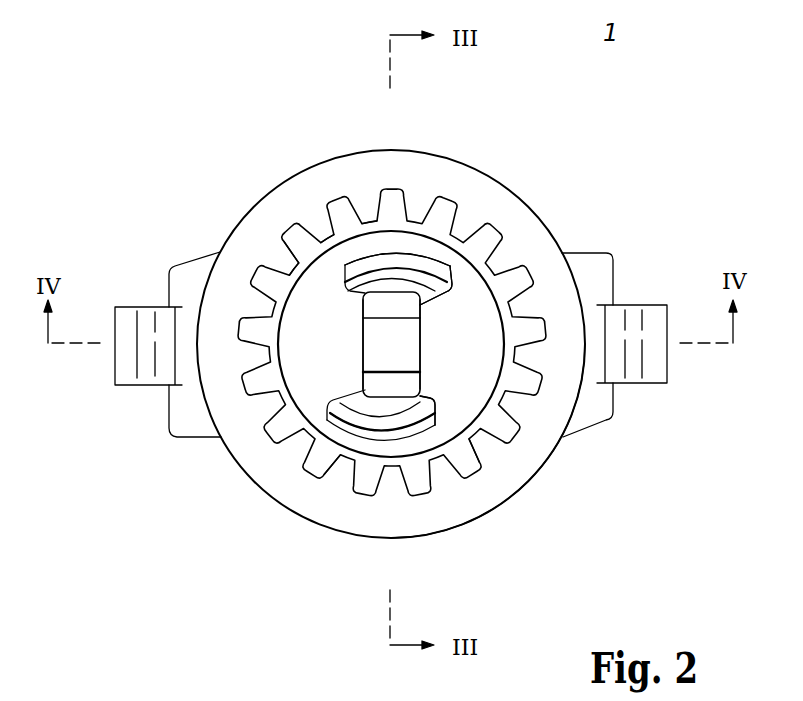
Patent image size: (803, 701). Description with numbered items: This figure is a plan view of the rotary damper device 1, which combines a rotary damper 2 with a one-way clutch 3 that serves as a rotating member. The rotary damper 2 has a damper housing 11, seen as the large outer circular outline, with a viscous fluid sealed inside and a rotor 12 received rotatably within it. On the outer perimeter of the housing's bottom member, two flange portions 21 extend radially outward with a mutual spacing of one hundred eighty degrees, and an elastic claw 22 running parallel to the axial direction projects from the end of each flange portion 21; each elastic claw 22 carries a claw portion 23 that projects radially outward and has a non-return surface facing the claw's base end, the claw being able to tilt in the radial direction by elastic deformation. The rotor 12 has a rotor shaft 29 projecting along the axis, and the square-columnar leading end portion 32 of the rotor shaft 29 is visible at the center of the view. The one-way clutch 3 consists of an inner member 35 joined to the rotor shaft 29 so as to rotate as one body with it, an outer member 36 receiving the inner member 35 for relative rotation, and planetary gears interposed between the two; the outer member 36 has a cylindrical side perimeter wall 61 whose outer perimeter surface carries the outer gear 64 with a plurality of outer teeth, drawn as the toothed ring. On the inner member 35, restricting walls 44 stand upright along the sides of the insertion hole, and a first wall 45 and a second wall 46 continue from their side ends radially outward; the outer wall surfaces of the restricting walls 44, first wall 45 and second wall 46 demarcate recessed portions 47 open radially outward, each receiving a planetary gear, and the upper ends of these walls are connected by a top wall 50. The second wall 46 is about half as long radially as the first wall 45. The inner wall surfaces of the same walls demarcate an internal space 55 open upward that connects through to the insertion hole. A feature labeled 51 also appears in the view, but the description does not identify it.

The gear assembly 1 is at (598, 41).
The rotary damper 2 is at (251, 482).
The one-way clutch 3 is at (345, 460).
The damper housing 11 is at (517, 498).
The rotor 12 is at (408, 402).
The flange portion 21 is at (193, 427).
The elastic claw 22 is at (133, 306).
The claw portion 23 is at (128, 363).
The rotor shaft 29 is at (382, 400).
The leading end portion 32 is at (365, 368).
The inner member 35 is at (325, 247).
The outer member 36 is at (288, 269).
The restricting wall 44 is at (418, 340).
The first wall 45 is at (455, 297).
The second wall 46 is at (430, 398).
The recessed portion 47 is at (427, 248).
The top wall 50 is at (480, 305).
The gear tooth 51 is at (470, 400).
The internal space 55 is at (358, 407).
The side perimeter wall 61 is at (368, 222).
The outer gear 64 is at (290, 237).